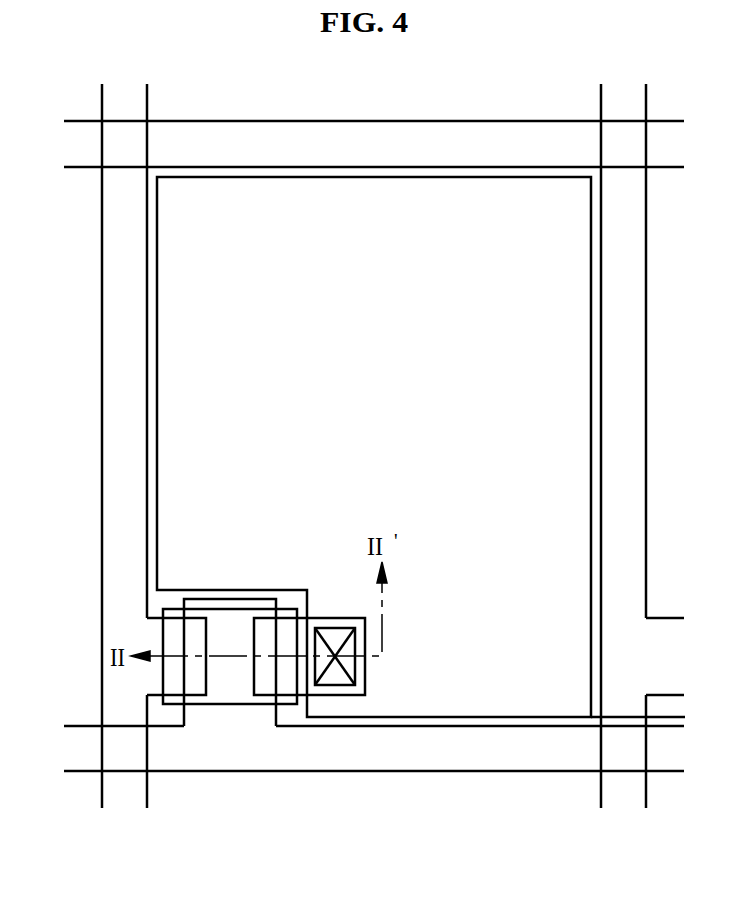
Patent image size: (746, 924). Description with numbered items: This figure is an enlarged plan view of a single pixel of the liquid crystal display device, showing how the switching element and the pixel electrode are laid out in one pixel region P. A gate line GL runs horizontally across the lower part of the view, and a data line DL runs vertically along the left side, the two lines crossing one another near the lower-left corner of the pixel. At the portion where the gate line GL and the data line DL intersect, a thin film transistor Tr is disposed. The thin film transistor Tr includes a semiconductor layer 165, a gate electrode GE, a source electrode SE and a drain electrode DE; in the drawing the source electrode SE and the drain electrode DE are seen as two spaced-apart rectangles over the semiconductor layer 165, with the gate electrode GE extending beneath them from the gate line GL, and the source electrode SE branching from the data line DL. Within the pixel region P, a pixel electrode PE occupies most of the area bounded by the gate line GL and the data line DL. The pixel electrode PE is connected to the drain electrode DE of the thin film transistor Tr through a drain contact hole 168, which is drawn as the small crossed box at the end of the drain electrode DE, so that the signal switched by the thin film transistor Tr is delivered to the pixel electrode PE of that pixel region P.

The data line DL is at (123, 398).
The gate line GL is at (459, 753).
The pixel electrode PE is at (157, 467).
The pixel region P is at (173, 526).
The source electrode SE is at (196, 683).
The gate electrode GE is at (228, 604).
The semiconductor layer 165 is at (241, 693).
The drain electrode DE is at (265, 683).
The drain contact hole 168 is at (338, 678).
The thin film transistor Tr is at (313, 837).